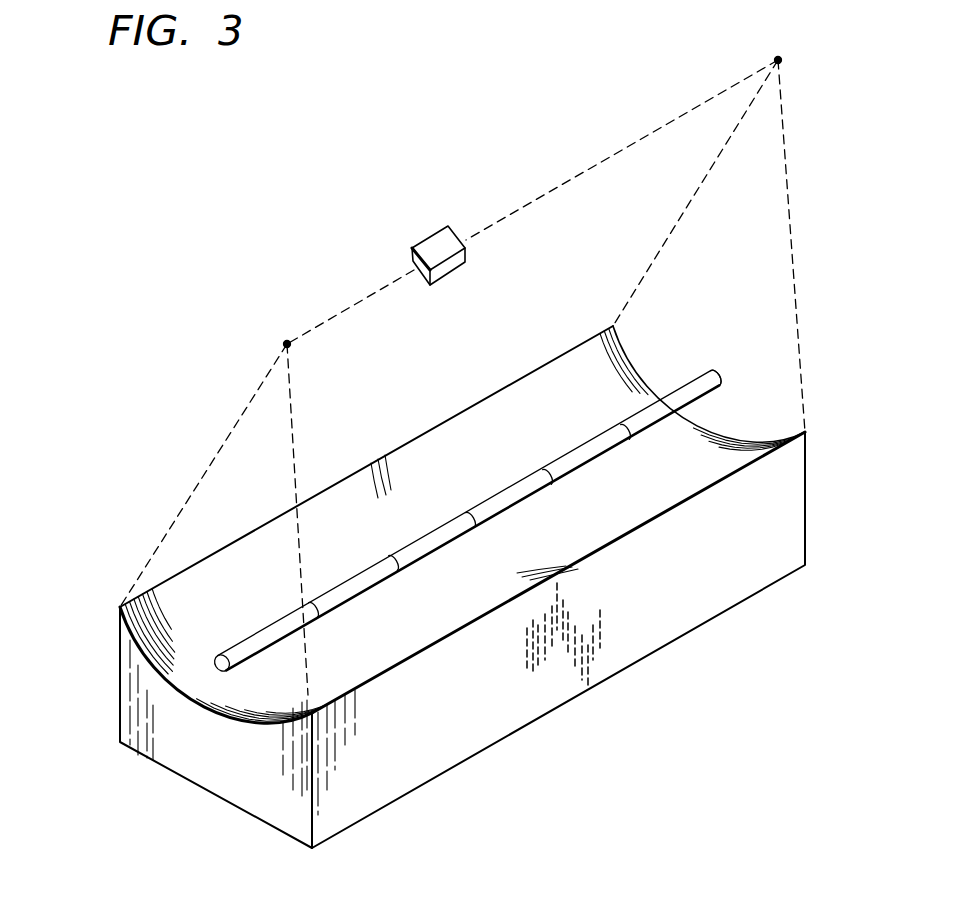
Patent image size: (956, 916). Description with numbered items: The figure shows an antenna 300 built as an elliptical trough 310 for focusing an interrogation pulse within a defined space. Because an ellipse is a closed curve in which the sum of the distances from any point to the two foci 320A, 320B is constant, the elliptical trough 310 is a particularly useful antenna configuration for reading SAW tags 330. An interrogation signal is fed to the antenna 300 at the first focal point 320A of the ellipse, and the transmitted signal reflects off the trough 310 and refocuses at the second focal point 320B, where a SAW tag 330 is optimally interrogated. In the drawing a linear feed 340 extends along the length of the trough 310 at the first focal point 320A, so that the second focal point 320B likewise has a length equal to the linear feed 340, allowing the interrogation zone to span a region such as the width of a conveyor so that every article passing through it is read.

The antenna 300 is at (326, 194).
The elliptical trough 310 is at (173, 632).
The first focal point 320A is at (720, 372).
The second focal point 320B is at (778, 57).
The SAW tag 330 is at (440, 246).
The linear feed 340 is at (426, 534).